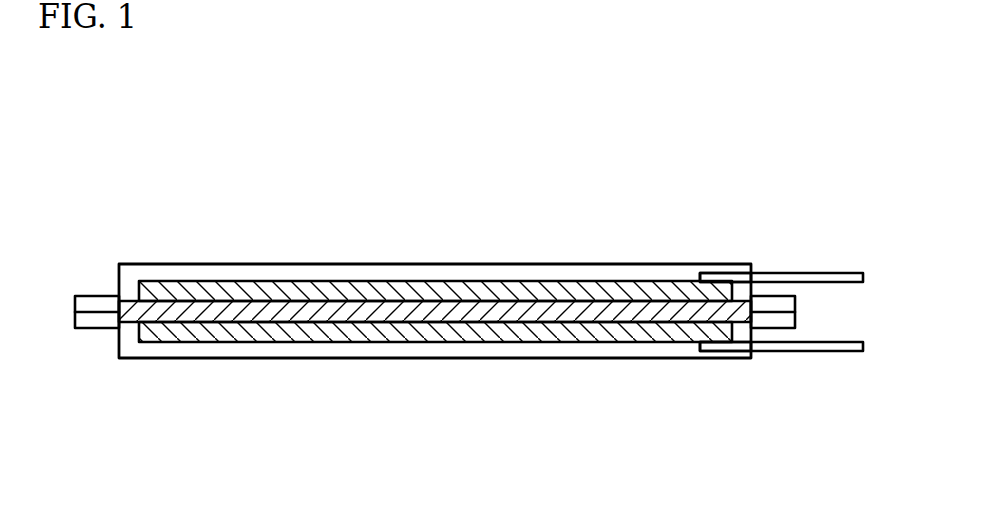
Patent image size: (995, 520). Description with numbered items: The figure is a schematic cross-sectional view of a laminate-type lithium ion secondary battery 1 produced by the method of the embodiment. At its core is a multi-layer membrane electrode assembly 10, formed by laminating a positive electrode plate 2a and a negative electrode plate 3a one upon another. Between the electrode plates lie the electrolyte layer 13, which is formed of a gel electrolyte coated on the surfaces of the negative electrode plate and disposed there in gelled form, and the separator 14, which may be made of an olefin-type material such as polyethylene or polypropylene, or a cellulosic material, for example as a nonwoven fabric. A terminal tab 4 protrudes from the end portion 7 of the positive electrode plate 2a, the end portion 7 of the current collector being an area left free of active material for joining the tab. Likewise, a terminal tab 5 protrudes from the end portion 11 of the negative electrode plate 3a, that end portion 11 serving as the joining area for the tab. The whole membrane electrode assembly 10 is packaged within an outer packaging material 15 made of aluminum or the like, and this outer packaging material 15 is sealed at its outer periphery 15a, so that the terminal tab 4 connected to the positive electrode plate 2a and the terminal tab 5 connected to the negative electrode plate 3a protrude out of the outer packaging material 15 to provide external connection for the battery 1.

The lithium ion secondary battery 1 is at (170, 132).
The positive electrode plate 2a is at (368, 292).
The negative electrode plate 3a is at (387, 340).
The terminal tab 4 is at (802, 275).
The terminal tab 5 is at (763, 350).
The end portion 7 is at (717, 280).
The multi-layer membrane electrode assembly 10 is at (646, 266).
The end portion 11 is at (712, 349).
The electrolyte layer 13 is at (465, 308).
The separator 14 is at (435, 265).
The outer packaging material 15 is at (247, 270).
The outer periphery 15a is at (87, 296).